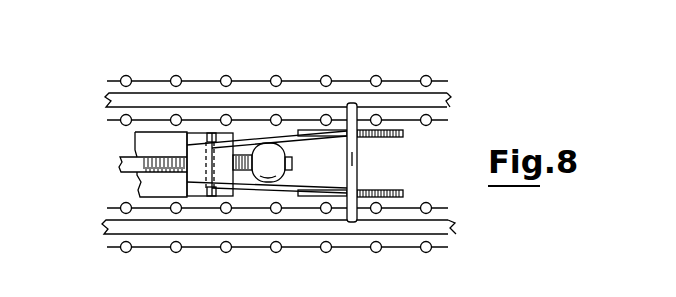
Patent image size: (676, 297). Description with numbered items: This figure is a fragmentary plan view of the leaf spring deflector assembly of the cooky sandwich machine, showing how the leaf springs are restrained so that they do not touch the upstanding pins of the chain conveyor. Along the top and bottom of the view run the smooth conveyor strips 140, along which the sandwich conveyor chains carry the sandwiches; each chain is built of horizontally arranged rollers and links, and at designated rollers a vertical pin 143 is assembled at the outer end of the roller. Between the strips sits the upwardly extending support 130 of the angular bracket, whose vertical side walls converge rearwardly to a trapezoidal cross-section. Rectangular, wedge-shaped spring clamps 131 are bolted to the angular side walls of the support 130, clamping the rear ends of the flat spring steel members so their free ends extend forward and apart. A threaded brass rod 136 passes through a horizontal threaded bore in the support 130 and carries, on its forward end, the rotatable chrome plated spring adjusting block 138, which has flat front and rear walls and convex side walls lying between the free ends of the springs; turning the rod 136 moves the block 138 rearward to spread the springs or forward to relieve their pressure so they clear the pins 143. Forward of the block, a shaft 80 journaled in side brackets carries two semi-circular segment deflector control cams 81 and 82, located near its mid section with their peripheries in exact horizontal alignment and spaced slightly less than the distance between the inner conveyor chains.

The shaft 80 is at (360, 163).
The segment deflector control cam 81 is at (390, 130).
The segment deflector control cam 82 is at (395, 197).
The upwardly extending support 130 is at (208, 160).
The spring clamp 131 is at (196, 137).
The threaded brass rod 136 is at (123, 153).
The spring adjusting block 138 is at (276, 152).
The conveyor strip 140 is at (112, 98).
The vertical pin 143 is at (278, 252).